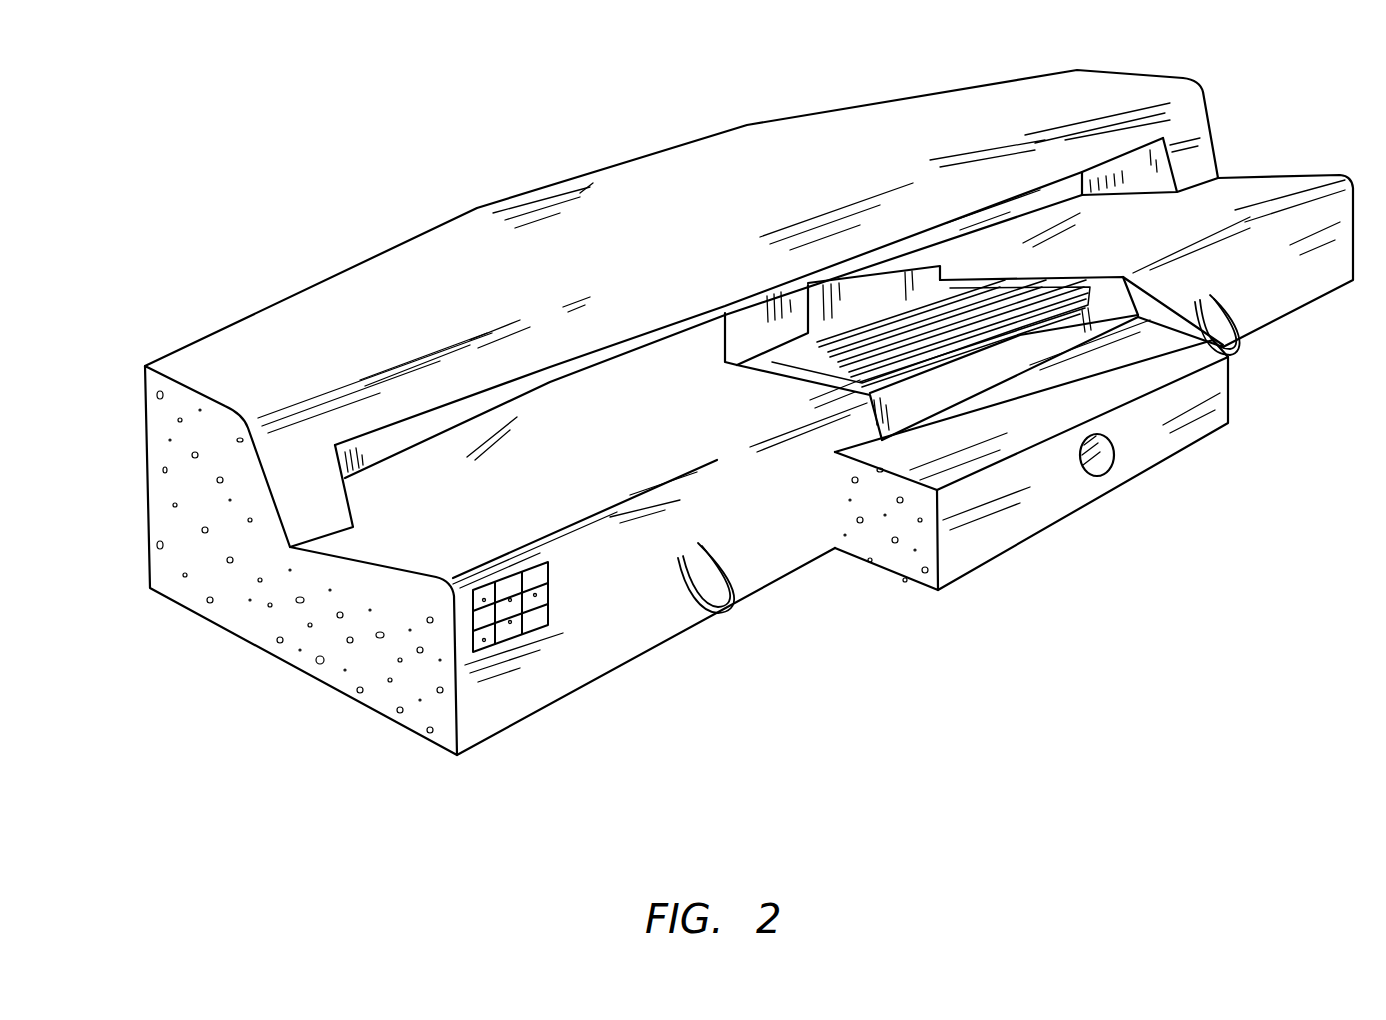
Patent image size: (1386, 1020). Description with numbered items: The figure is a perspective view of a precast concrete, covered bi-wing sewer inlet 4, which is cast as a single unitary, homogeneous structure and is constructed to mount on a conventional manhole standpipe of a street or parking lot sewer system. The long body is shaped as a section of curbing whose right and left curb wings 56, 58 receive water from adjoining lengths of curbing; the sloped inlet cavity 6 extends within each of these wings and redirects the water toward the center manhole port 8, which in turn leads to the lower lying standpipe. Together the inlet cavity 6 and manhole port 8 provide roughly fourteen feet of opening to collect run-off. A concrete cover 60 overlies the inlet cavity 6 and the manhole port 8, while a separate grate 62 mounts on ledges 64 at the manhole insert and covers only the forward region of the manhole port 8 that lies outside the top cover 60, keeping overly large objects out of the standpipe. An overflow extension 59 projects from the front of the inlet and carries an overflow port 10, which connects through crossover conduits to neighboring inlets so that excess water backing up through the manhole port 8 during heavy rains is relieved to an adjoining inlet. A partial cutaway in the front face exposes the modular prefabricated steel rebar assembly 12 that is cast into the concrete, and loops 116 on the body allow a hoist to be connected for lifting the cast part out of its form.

The sewer inlet 4 is at (228, 236).
The concrete cover 60 is at (407, 256).
The left curb wing 58 is at (542, 692).
The inlet cavity 6 is at (362, 467).
The manhole port 8 is at (725, 345).
The ledges 64 is at (1068, 272).
The grate 62 is at (782, 378).
The right curb wing 56 is at (1305, 300).
The overflow extension 59 is at (1015, 550).
The overflow port 10 is at (1107, 457).
The steel rebar assembly 12 is at (552, 603).
The loops 116 is at (733, 612).